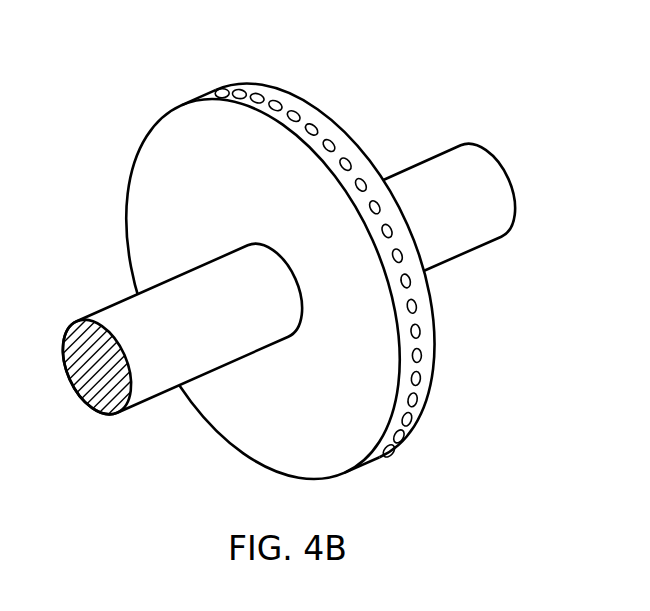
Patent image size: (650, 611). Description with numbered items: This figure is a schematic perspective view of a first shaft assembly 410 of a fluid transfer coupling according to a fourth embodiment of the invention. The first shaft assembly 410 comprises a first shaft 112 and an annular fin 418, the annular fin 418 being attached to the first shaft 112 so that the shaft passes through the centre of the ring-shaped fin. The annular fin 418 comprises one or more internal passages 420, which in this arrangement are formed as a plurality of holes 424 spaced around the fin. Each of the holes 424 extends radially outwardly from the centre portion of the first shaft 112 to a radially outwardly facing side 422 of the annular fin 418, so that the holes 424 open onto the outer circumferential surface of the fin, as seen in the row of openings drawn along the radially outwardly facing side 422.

The first shaft assembly 410 is at (131, 84).
The first shaft 112 is at (118, 311).
The annular fin 418 is at (247, 442).
The internal passages 420 is at (371, 273).
The radially outwardly facing side 422 is at (423, 409).
The holes 424 is at (399, 283).